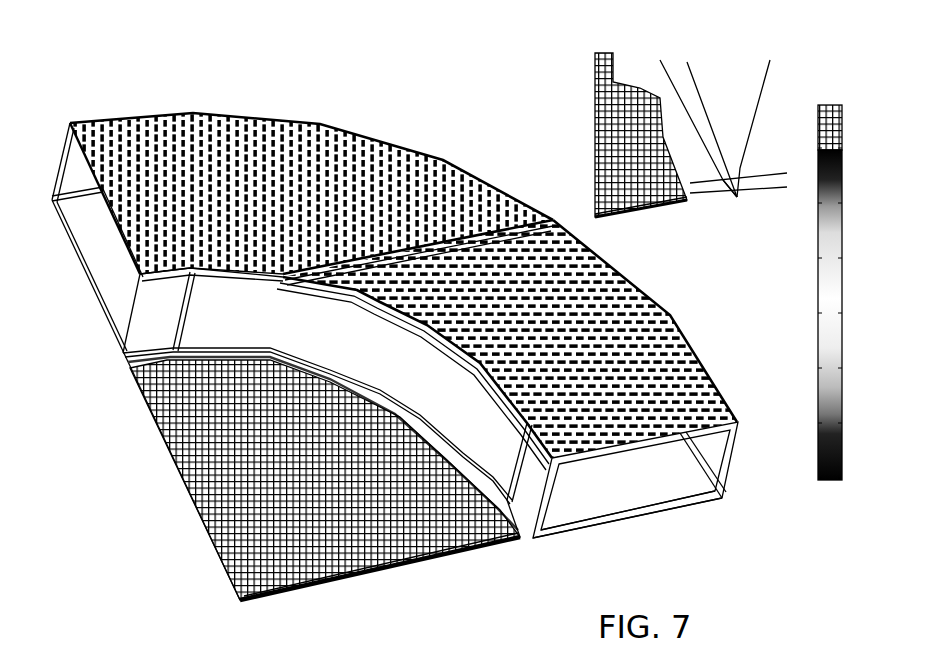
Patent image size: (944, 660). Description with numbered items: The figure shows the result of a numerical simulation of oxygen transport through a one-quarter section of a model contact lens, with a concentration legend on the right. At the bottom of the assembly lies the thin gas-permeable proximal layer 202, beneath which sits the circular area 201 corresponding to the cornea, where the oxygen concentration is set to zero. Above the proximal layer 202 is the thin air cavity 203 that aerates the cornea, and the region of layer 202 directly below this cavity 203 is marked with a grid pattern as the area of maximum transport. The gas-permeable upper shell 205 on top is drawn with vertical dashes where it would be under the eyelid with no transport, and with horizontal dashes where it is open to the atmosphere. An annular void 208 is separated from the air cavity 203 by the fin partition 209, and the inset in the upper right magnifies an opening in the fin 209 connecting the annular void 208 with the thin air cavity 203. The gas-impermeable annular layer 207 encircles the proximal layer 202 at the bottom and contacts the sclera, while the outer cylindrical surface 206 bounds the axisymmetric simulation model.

The circular area 201 is at (286, 591).
The gas-permeable proximal layer 202 is at (358, 573).
The air cavity 203 is at (522, 540).
The gas-permeable upper shell 205 is at (693, 347).
The gas-impermeable outer cylindrical surface 206 is at (737, 462).
The gas-impermeable annular layer 207 is at (607, 527).
The annular void 208 is at (628, 487).
The fins 209 is at (176, 320).